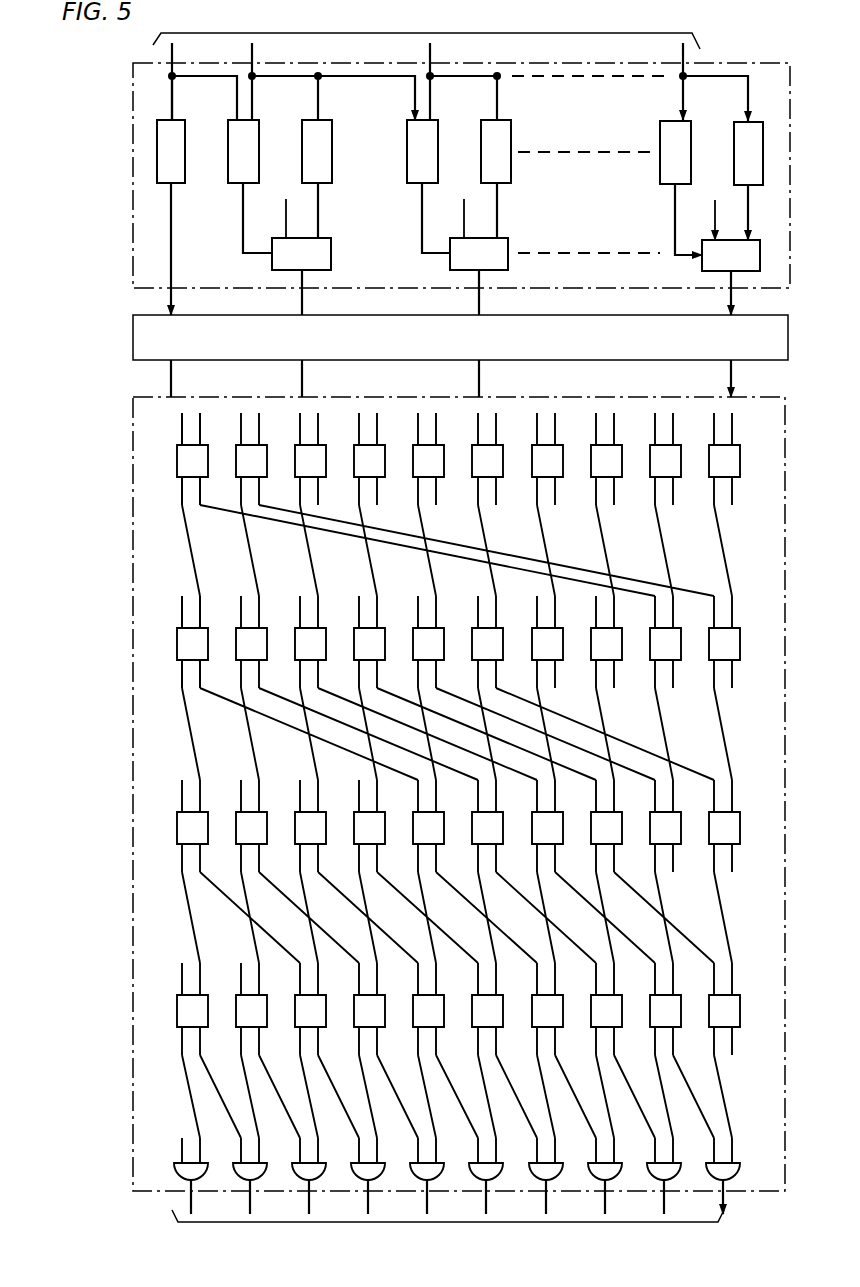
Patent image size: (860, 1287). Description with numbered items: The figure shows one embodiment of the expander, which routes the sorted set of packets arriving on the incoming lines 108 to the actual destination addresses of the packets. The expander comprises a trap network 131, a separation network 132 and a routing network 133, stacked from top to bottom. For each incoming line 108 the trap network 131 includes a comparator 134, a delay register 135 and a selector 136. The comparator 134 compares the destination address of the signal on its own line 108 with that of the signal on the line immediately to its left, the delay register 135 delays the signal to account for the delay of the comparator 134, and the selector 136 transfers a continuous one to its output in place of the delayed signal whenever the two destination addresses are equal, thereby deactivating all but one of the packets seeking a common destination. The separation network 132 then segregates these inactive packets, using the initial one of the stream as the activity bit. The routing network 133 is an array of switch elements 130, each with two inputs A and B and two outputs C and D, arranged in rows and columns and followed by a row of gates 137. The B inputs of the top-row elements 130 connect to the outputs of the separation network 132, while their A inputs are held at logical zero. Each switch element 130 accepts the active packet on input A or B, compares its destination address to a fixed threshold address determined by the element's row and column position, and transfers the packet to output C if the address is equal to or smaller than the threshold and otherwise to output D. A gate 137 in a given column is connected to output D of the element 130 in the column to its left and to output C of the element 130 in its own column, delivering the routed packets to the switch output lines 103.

The incoming lines 108 is at (426, 65).
The trap network 131 is at (766, 63).
The separation network 132 is at (763, 320).
The routing network 133 is at (763, 401).
The comparator 134 is at (258, 126).
The delay register 135 is at (184, 124).
The selector 136 is at (334, 245).
The switch element 130 is at (175, 477).
The AND gate 137 is at (173, 1166).
The switch output lines 103 is at (448, 1227).
The switch element input A is at (181, 426).
The switch element input B is at (200, 426).
The switch element output C is at (181, 505).
The switch element output D is at (200, 500).